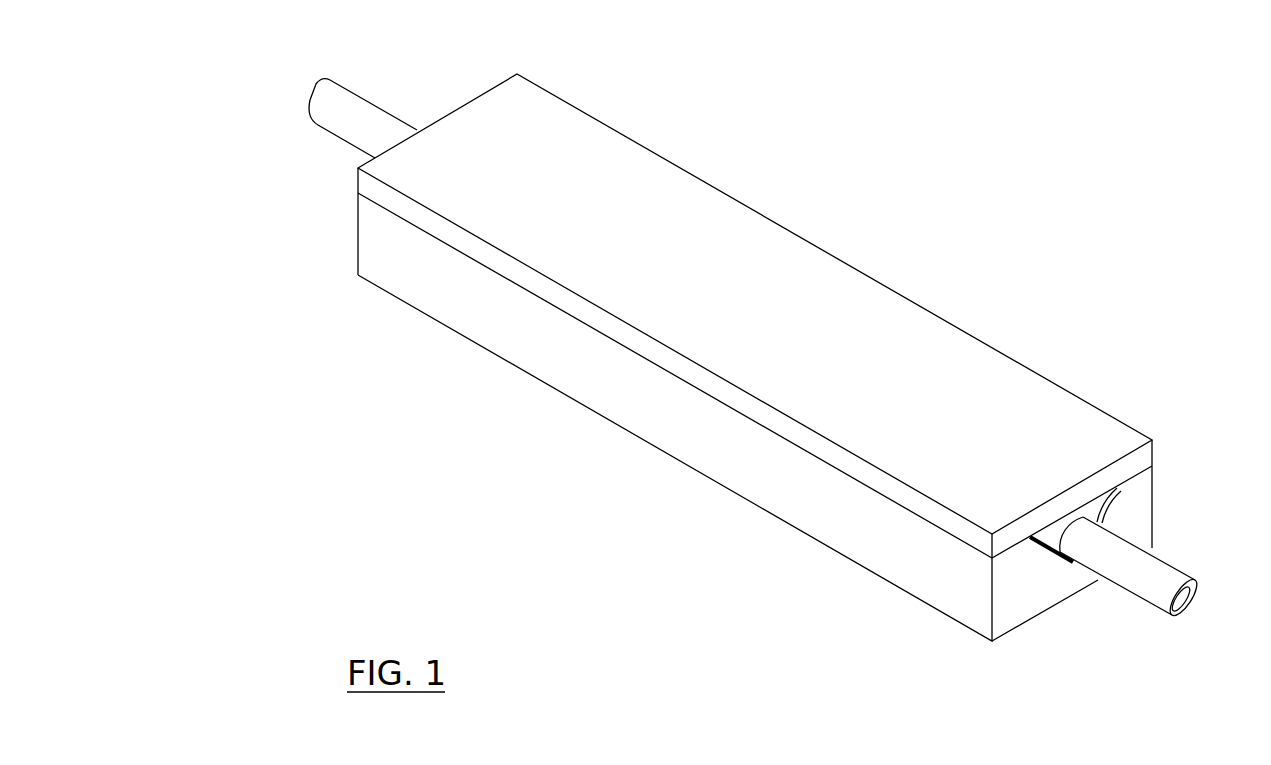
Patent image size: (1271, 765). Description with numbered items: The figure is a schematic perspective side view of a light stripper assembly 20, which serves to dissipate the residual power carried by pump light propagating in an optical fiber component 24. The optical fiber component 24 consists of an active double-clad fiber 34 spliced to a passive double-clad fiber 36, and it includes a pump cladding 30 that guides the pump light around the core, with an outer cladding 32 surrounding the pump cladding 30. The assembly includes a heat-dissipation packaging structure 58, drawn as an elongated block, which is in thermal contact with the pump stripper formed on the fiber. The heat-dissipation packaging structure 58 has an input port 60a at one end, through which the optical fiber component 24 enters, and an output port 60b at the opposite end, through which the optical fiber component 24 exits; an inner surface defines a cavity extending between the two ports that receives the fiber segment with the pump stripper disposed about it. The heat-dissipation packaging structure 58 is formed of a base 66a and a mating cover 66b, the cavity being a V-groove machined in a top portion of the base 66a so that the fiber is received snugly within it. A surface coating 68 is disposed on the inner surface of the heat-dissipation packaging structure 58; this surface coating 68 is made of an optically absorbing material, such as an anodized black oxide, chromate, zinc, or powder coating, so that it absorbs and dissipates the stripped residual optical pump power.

The light stripper assembly 20 is at (1014, 109).
The optical fiber component 24 is at (360, 117).
The pump cladding 30 is at (1187, 588).
The outer cladding 32 is at (1182, 620).
The active double-clad fiber 34 is at (337, 159).
The passive double-clad fiber 36 is at (1130, 563).
The heat-dissipation packaging structure 58 is at (563, 373).
The input port 60a is at (344, 183).
The output port 60b is at (1080, 611).
The base 66a is at (962, 607).
The mating cover 66b is at (1083, 418).
The surface coating 68 is at (1110, 497).